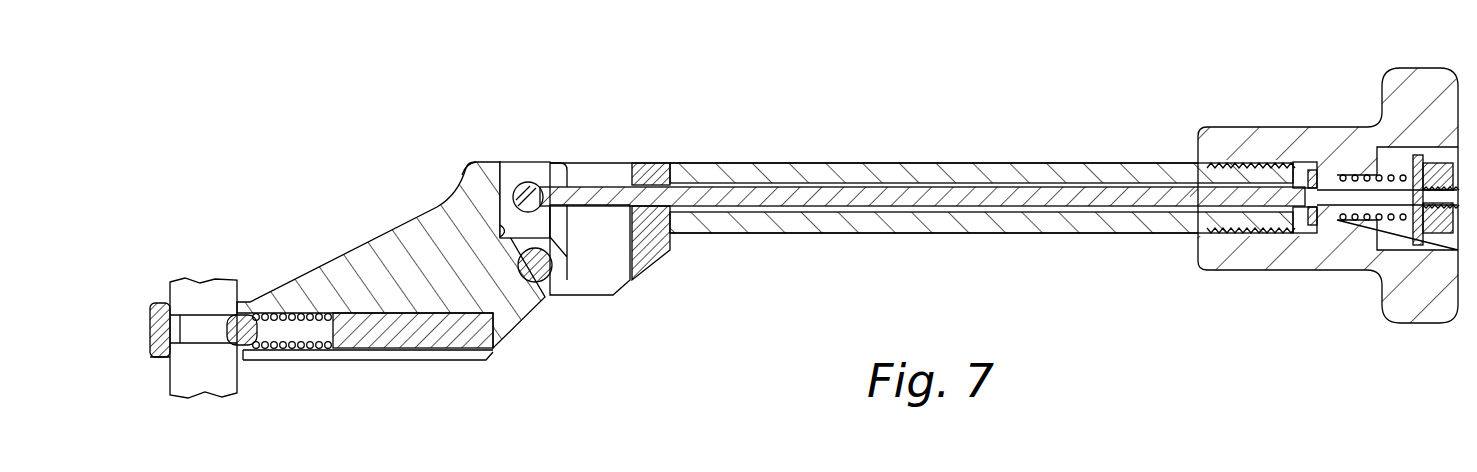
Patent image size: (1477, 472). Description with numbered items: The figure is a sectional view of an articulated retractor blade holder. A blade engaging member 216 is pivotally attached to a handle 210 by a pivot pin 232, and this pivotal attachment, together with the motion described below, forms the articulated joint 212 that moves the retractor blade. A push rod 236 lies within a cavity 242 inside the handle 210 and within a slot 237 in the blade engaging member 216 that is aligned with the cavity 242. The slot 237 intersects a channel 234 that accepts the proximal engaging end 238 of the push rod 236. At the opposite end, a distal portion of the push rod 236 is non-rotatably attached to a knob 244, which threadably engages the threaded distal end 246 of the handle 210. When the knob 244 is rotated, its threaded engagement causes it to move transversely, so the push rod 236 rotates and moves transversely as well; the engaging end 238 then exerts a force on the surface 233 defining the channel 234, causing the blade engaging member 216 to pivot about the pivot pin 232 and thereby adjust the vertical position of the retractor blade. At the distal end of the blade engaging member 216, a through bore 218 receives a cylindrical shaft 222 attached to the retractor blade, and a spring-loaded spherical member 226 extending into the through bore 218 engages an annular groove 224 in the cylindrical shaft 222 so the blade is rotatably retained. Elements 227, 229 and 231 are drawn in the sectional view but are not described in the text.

The handle 210 is at (693, 168).
The articulated joint 212 is at (508, 158).
The blade engaging member 216 is at (450, 217).
The through bore 218 is at (157, 360).
The cylindrical shaft 222 is at (217, 278).
The annular groove 224 is at (150, 332).
The spring-loaded spherical member 226 is at (247, 360).
The slide block 227 is at (453, 343).
The base plate 229 is at (393, 350).
The spring 231 is at (307, 353).
The pivot pin 232 is at (553, 280).
The surface 233 is at (470, 163).
The channel 234 is at (550, 170).
The push rod 236 is at (620, 180).
The slot 237 is at (567, 225).
The proximal engaging end 238 is at (525, 190).
The cavity 242 is at (767, 187).
The knob 244 is at (1438, 293).
The threaded distal end 246 is at (1237, 233).